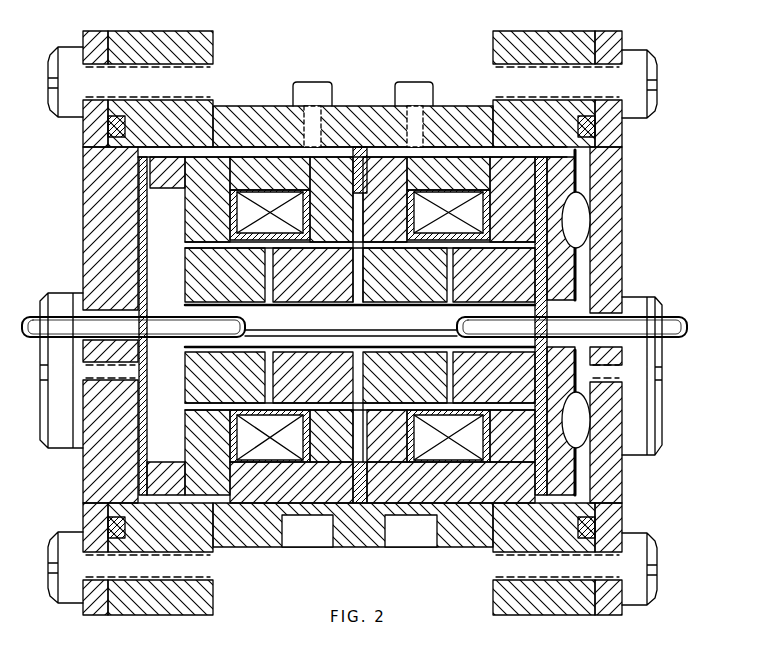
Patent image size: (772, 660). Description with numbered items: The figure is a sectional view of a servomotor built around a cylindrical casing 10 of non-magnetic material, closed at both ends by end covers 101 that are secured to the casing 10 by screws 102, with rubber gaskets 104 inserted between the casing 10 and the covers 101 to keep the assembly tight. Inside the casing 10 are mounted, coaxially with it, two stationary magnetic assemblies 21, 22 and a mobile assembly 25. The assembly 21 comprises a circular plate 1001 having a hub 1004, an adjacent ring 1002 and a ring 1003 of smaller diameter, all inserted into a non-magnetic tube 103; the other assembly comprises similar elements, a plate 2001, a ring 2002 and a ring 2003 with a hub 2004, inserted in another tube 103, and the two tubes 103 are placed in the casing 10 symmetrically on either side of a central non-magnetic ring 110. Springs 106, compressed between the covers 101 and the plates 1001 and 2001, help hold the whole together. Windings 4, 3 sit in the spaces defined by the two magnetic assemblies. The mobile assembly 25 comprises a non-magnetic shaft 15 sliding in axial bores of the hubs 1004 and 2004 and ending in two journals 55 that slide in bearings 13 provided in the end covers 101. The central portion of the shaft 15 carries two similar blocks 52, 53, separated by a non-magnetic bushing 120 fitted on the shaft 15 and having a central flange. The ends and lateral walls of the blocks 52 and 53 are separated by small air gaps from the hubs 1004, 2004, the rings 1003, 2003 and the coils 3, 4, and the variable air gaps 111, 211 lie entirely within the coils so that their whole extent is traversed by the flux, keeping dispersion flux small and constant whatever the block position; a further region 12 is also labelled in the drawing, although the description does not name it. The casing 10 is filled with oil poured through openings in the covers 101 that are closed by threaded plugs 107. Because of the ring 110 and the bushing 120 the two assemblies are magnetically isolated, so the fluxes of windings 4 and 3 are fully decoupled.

The end cover 101 is at (610, 150).
The screw 102 is at (68, 60).
The tube 103 is at (215, 152).
The rubber gasket 104 is at (112, 525).
The spring 106 is at (143, 458).
The threaded plug 107 is at (52, 437).
The central non magnetic ring 110 is at (383, 210).
The variable air gap 111 is at (268, 296).
The non magnetic bushing 120 is at (405, 185).
The circular plate 1001 is at (205, 222).
The ring 1002 is at (272, 165).
The ring 1003 is at (328, 190).
The hub 1004 is at (190, 273).
The circular plate 2001 is at (600, 215).
The ring 2002 is at (440, 170).
The ring 2003 is at (380, 150).
The hub 2004 is at (424, 316).
The variable air gap 211 is at (553, 268).
The gap 12 is at (162, 428).
The bearing 13 is at (143, 318).
The shaft 15 is at (294, 318).
The stationary magnetic assembly 21 is at (205, 492).
The stationary magnetic assembly 22 is at (505, 475).
The mobile assembly 25 is at (232, 352).
The winding 3 is at (282, 455).
The winding 4 is at (445, 452).
The casing 10 is at (288, 510).
The block 52 is at (292, 278).
The block 53 is at (360, 326).
The journal 55 is at (28, 318).